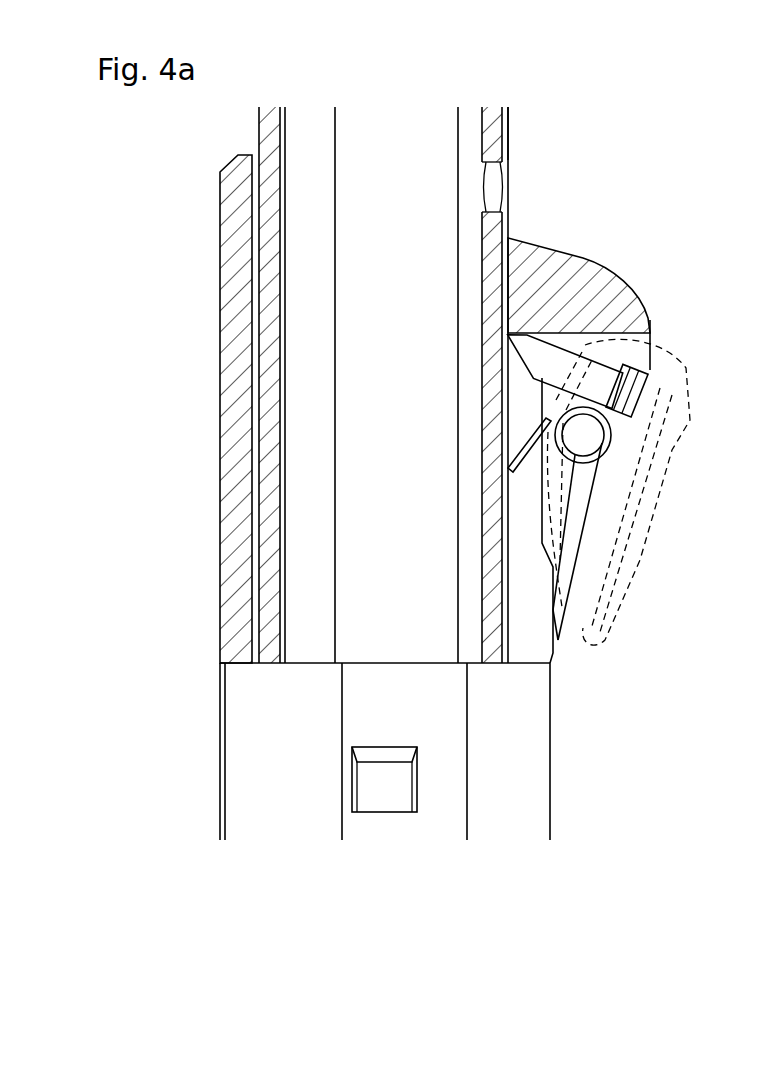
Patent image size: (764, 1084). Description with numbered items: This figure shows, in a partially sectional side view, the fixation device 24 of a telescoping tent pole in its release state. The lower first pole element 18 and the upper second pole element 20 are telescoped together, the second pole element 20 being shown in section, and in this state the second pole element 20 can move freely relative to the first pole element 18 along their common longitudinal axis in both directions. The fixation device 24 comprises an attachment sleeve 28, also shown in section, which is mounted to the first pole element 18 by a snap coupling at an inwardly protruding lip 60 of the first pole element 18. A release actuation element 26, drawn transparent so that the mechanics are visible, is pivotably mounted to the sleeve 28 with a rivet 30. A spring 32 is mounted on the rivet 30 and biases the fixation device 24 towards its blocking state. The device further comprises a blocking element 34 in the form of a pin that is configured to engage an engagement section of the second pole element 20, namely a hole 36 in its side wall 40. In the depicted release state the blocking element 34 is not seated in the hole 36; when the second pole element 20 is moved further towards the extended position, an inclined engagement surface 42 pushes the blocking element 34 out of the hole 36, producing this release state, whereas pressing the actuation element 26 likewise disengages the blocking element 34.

The first pole element 18 is at (533, 778).
The second pole element 20 is at (308, 150).
The fixation device 24 is at (661, 249).
The release actuation element 26 is at (583, 643).
The attachment sleeve 28 is at (220, 275).
The rivet 30 is at (587, 432).
The spring 32 is at (527, 450).
The blocking element 34 is at (567, 331).
The hole 36 is at (516, 171).
The side wall 40 is at (510, 118).
The inclined engagement surface 42 is at (497, 374).
The inwardly protruding lip 60 is at (378, 783).